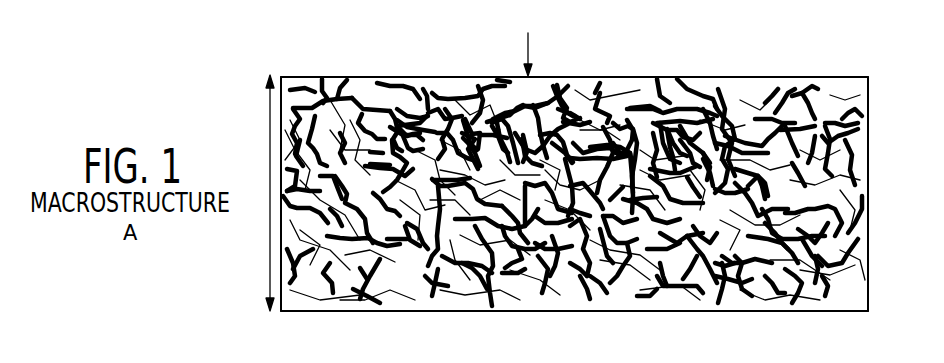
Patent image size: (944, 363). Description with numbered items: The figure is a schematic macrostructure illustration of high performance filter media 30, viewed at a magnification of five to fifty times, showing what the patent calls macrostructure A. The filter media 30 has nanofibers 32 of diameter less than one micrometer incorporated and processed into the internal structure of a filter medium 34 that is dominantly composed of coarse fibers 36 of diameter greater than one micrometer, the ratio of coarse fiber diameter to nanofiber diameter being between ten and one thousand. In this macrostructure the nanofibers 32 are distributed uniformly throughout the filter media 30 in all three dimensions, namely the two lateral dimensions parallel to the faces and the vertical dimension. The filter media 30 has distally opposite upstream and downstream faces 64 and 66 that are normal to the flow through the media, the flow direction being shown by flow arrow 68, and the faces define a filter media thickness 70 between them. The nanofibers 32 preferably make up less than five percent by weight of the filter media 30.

The filter media 30 is at (358, 74).
The nanofibers 32 is at (382, 92).
The filter medium 34 is at (400, 84).
The coarse fibers 36 is at (420, 96).
The upstream face 64 is at (757, 76).
The downstream face 66 is at (752, 312).
The flow arrow 68 is at (530, 42).
The filter media thickness 70 is at (268, 115).